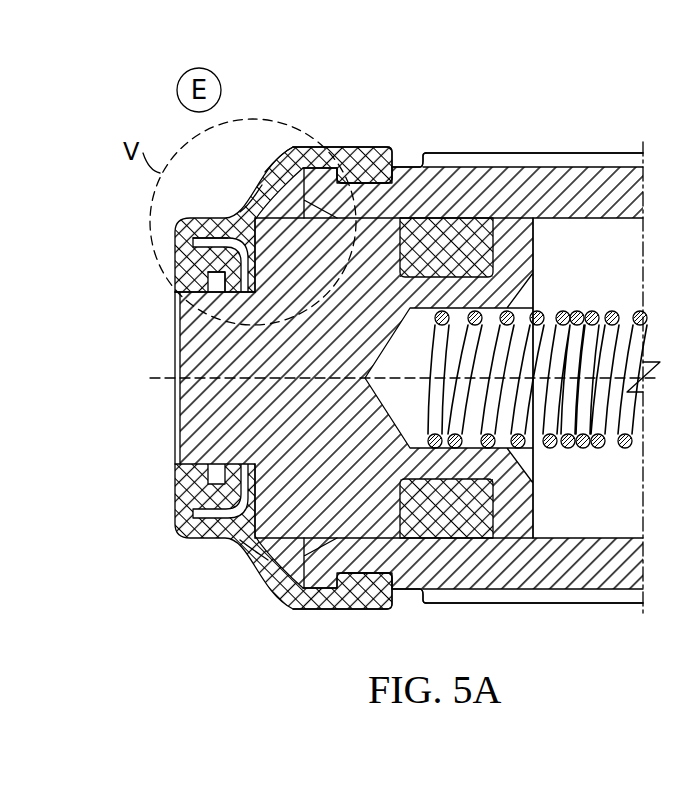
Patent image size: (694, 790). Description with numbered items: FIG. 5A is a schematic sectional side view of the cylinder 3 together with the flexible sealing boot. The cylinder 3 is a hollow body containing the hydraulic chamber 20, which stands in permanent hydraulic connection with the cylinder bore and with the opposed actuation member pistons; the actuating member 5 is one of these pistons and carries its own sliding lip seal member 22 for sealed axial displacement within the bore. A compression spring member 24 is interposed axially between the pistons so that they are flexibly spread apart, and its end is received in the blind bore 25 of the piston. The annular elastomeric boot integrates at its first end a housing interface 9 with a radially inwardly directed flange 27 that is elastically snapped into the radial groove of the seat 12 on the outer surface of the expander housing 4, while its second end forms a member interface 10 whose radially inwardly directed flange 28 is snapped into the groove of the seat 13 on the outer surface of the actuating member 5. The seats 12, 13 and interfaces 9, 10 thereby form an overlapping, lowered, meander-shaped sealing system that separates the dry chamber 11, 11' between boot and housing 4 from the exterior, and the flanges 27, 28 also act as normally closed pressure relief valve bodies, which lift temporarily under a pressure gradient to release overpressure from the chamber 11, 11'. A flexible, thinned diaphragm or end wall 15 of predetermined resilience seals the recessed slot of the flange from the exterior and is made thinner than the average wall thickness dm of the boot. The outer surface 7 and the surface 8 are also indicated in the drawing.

The cylinder 3 is at (623, 562).
The expander housing 4 is at (603, 210).
The actuating member (piston) 5 is at (215, 407).
The outer surface 7 is at (613, 218).
The sealing lip surface 8 is at (262, 194).
The housing interface 9 is at (380, 147).
The member interface 10 is at (175, 272).
The dry chamber 11 is at (285, 378).
The dry chamber 11' is at (277, 119).
The seat 12 is at (384, 203).
The seat 13 is at (232, 290).
The diaphragm/end wall 15 is at (175, 290).
The hydraulic chamber 20 is at (598, 275).
The sliding lip seal member 22 is at (473, 233).
The compression spring member 24 is at (550, 447).
The blind bore 25 is at (420, 410).
The radially inwardly directed flange 27 is at (342, 162).
The radially inwardly directed flange 28 is at (283, 378).
The average wall thickness dm is at (287, 507).